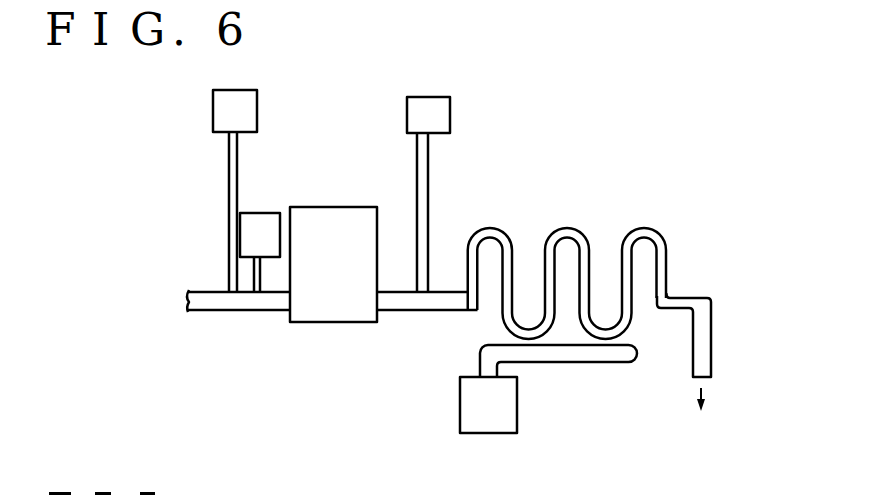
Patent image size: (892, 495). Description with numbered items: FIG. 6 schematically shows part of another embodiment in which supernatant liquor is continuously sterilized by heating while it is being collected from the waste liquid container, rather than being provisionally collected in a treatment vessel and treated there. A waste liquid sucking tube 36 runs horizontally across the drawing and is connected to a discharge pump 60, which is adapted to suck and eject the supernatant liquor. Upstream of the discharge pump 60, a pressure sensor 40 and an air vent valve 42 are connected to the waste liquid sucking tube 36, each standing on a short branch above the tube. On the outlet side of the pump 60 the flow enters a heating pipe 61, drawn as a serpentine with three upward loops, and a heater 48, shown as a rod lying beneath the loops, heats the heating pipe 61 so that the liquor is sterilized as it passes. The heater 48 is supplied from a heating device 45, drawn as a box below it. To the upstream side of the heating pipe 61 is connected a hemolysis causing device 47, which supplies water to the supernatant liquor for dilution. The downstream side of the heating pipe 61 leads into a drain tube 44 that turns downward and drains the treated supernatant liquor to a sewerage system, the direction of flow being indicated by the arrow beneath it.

The waste liquid sucking tube 36 is at (230, 311).
The pressure sensor 40 is at (266, 217).
The air vent valve 42 is at (220, 113).
The drain tube 44 is at (707, 341).
The heating device 45 is at (510, 443).
The hemolysis causing device 47 is at (462, 115).
The heater 48 is at (590, 363).
The discharge pump 60 is at (339, 218).
The heating pipe 61 is at (503, 229).